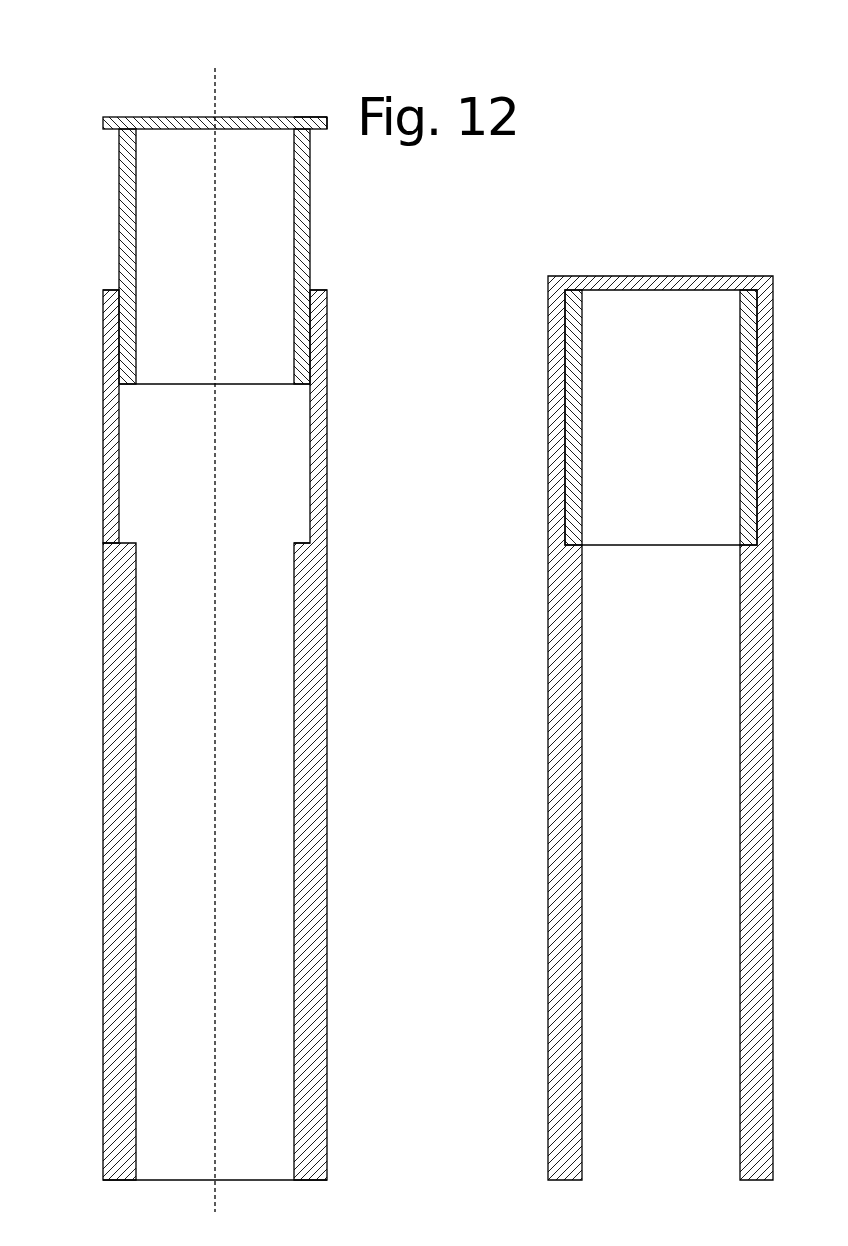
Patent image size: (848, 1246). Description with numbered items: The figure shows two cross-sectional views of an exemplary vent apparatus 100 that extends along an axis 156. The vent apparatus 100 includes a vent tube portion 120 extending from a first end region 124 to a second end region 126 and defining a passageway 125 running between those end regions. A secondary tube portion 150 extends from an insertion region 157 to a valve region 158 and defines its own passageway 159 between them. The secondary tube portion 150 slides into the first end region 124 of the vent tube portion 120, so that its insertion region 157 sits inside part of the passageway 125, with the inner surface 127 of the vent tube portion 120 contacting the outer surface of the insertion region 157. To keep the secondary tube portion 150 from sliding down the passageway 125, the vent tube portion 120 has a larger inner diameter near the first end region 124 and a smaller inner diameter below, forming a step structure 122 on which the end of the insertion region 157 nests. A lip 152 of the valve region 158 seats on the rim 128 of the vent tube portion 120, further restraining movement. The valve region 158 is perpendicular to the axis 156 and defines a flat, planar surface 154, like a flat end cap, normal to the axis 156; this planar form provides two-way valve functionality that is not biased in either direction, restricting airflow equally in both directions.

The vent apparatus 100 is at (80, 200).
The vent tube portion 120 is at (340, 790).
The step structure 122 is at (302, 543).
The first end region 124 is at (325, 320).
The passageway 125 is at (192, 567).
The second end region 126 is at (327, 1163).
The inner surface 127 is at (120, 487).
The rim 128 is at (115, 290).
The secondary tube portion 150 is at (325, 260).
The lip 152 is at (328, 130).
The surface 154 is at (170, 117).
The axis 156 is at (217, 1042).
The insertion region 157 is at (300, 343).
The valve region 158 is at (305, 117).
The passageway 159 is at (177, 273).